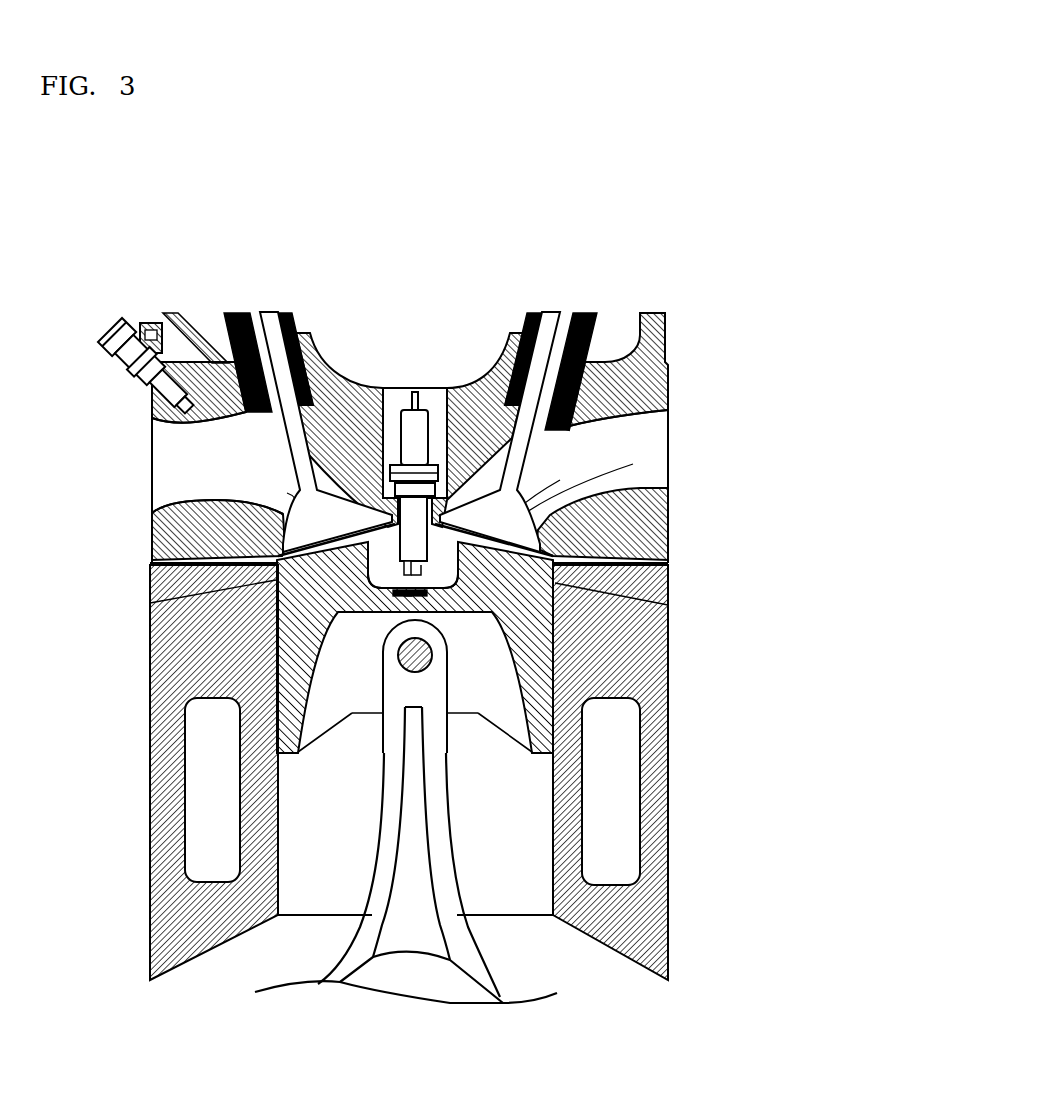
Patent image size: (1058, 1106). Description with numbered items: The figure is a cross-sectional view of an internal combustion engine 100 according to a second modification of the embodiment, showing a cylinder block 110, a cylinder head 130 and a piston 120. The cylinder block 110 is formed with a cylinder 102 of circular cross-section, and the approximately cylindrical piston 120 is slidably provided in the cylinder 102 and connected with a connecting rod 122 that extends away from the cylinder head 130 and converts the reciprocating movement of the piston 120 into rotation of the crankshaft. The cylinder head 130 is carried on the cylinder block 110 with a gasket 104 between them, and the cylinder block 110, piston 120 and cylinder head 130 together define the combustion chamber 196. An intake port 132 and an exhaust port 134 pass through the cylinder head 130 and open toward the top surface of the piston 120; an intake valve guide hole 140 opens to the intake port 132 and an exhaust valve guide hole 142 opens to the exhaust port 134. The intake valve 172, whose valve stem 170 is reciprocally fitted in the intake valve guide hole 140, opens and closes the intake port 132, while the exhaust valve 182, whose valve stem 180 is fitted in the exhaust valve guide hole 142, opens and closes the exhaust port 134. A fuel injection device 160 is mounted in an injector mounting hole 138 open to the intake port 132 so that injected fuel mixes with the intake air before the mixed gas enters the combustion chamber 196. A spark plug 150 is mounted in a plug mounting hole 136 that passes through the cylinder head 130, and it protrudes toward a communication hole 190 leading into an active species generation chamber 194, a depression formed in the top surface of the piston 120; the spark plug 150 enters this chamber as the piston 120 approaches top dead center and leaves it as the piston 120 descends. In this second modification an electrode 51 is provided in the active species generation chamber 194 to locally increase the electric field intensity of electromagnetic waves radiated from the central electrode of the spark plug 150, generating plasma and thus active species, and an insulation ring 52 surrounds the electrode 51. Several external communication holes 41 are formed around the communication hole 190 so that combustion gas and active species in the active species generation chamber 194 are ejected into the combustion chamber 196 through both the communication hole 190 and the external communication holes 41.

The internal combustion engine 100 is at (628, 178).
The cylinder 102 is at (278, 864).
The gasket 104 is at (150, 562).
The cylinder block 110 is at (668, 655).
The external communication hole 41 is at (150, 603).
The piston 120 is at (515, 715).
The connecting rod 122 is at (457, 907).
The cylinder head 130 is at (398, 400).
The intake port 132 is at (199, 500).
The exhaust port 134 is at (670, 488).
The plug mounting hole 136 is at (443, 425).
The injector mounting hole 138 is at (160, 421).
The intake valve guide hole 140 is at (282, 437).
The exhaust valve guide hole 142 is at (670, 412).
The spark plug 150 is at (398, 435).
The fuel injection device 160 is at (120, 360).
The valve stem 170 is at (264, 322).
The intake valve 172 is at (287, 493).
The valve stem 180 is at (565, 320).
The exhaust valve 182 is at (633, 464).
The communication hole 190 is at (305, 647).
The active species generation chamber 194 is at (388, 575).
The combustion chamber 196 is at (560, 480).
The electrode 51 is at (410, 600).
The insulation ring 52 is at (418, 598).